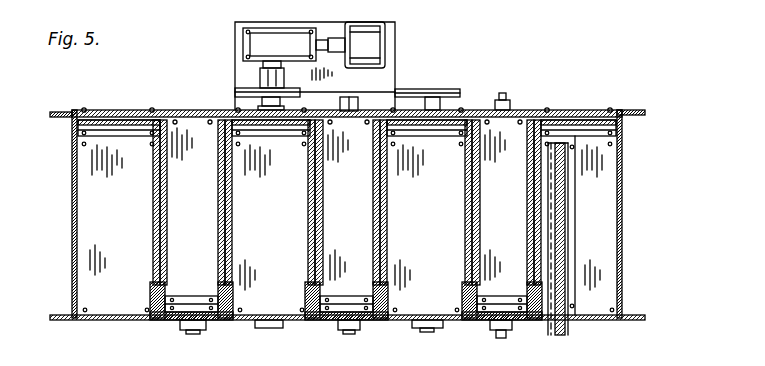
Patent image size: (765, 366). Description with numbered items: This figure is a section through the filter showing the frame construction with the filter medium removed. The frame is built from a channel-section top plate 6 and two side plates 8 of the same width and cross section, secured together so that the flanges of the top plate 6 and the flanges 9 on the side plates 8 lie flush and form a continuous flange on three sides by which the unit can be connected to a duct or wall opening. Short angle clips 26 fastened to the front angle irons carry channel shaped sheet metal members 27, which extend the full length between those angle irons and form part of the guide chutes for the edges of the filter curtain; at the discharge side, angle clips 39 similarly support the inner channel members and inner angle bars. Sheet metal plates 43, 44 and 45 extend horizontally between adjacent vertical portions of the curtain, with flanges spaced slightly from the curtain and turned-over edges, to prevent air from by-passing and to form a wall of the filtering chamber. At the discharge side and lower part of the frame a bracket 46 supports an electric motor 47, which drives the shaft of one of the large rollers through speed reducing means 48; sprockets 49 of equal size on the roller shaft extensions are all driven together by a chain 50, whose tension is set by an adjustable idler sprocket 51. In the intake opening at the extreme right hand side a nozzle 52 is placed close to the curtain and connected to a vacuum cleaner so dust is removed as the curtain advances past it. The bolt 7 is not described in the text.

The top plate 6 is at (501, 343).
The bolt 7 is at (427, 343).
The side plate 8 is at (72, 215).
The flange 9 is at (632, 112).
The angle clip 26 is at (198, 296).
The channel shaped sheet metal member 27 is at (233, 304).
The angle clip 39 is at (433, 132).
The sheet metal plate 43 is at (500, 214).
The sheet metal plate 44 is at (426, 210).
The sheet metal plate 45 is at (607, 192).
The bracket 46 is at (394, 84).
The electric motor 47 is at (378, 48).
The speed reducing means 48 is at (256, 46).
The sprocket 49 is at (240, 90).
The chain 50 is at (318, 93).
The idler sprocket 51 is at (354, 93).
The nozzle 52 is at (566, 242).